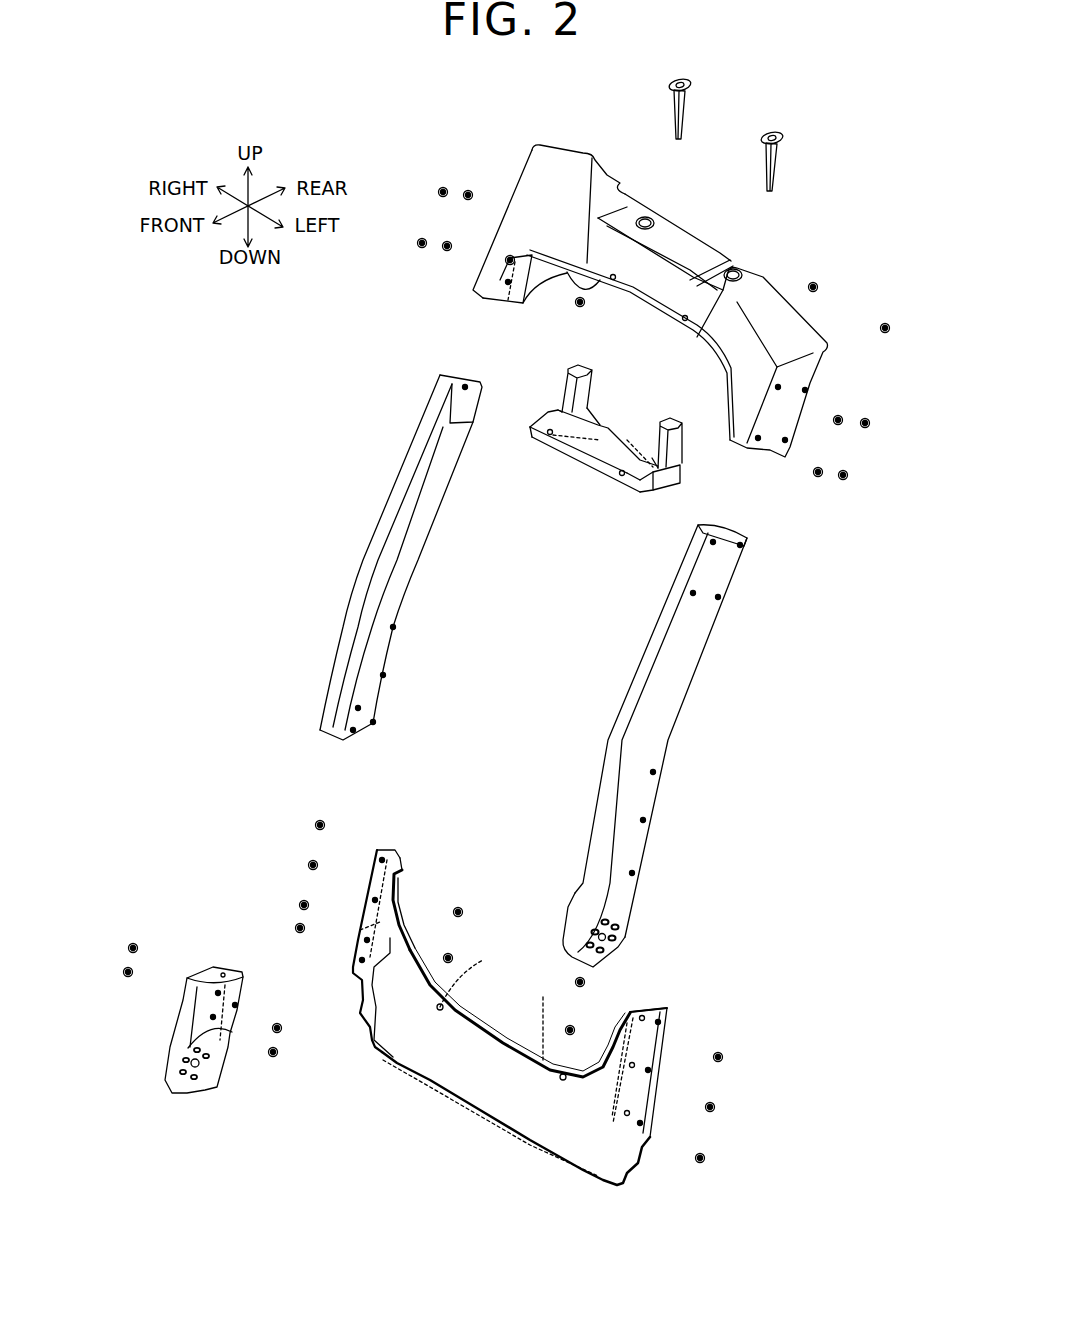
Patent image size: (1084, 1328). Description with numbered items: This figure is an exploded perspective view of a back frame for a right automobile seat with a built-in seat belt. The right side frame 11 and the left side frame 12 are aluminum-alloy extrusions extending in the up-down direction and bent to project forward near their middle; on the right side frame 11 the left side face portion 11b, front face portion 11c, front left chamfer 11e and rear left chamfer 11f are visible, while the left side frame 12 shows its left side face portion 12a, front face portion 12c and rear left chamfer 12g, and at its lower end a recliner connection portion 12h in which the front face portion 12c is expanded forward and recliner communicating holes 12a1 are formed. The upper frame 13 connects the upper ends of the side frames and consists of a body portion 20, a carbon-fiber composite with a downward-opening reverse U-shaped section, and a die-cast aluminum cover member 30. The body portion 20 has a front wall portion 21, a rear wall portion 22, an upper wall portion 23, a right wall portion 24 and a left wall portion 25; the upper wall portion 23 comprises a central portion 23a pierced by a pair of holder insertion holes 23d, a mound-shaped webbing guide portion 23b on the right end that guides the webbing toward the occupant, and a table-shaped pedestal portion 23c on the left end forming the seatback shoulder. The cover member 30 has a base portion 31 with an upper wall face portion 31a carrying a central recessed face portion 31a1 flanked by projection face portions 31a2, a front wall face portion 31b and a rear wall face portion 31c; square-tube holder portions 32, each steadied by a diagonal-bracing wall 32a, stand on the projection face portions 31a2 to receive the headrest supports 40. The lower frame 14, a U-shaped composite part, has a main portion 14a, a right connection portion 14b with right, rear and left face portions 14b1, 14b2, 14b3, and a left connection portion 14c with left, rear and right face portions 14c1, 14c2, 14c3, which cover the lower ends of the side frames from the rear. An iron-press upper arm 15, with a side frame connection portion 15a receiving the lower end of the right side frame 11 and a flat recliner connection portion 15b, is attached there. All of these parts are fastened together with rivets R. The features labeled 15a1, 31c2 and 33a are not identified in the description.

The right side frame 11 is at (367, 557).
The left side face portion 11b is at (373, 650).
The front face portion 11c is at (360, 590).
The front left chamfer 11e is at (365, 618).
The rear left chamfer 11f is at (395, 608).
The left side frame 12 is at (662, 746).
The left side face portion 12a is at (660, 700).
The recliner communicating holes 12a1 is at (617, 923).
The front face portion 12c is at (617, 740).
The rear left chamfer 12g is at (693, 657).
The recliner connection portion 12h is at (622, 908).
The upper frame 13 is at (707, 243).
The lower frame 14 is at (549, 981).
The main portion 14a is at (433, 1082).
The right connection portion 14b is at (411, 917).
The right face portion 14b1 is at (380, 850).
The rear face portion 14b2 is at (402, 857).
The left face portion 14b3 is at (407, 872).
The left connection portion 14c is at (686, 1036).
The left face portion 14c1 is at (662, 1022).
The rear face portion 14c2 is at (662, 1005).
The right face portion 14c3 is at (642, 1007).
The upper arm 15 is at (212, 1041).
The side frame connection portion 15a is at (232, 970).
The end wall of mounting bracket 15a1 is at (210, 1057).
The recliner connection portion 15b is at (182, 1090).
The body portion 20 is at (656, 268).
The front wall portion 21 is at (655, 295).
The rear wall portion 22 is at (544, 280).
The upper wall portion 23 is at (656, 268).
The central portion 23a is at (690, 247).
The webbing guide portion 23b is at (558, 143).
The pedestal portion 23c is at (782, 322).
The holder insertion holes 23d is at (647, 215).
The right wall portion 24 is at (500, 290).
The left wall portion 25 is at (798, 375).
The cover member 30 is at (612, 451).
The base portion 31 is at (612, 467).
The upper wall face portion 31a is at (600, 425).
The recessed face portion 31a1 is at (592, 447).
The projection face portions 31a2 is at (537, 413).
The front wall face portion 31b is at (620, 485).
The rear wall face portion 31c is at (683, 475).
The edge of right tab 31c2 is at (652, 485).
The holder portion 32 is at (563, 370).
The diagonal-bracing wall 32a is at (652, 455).
The boss 33a is at (563, 410).
The headrest support 40 is at (686, 113).
The rivets R is at (440, 246).